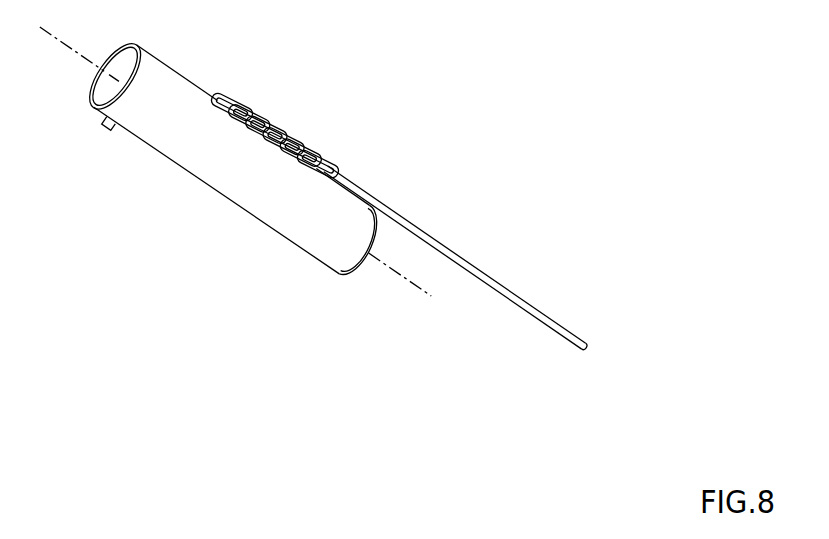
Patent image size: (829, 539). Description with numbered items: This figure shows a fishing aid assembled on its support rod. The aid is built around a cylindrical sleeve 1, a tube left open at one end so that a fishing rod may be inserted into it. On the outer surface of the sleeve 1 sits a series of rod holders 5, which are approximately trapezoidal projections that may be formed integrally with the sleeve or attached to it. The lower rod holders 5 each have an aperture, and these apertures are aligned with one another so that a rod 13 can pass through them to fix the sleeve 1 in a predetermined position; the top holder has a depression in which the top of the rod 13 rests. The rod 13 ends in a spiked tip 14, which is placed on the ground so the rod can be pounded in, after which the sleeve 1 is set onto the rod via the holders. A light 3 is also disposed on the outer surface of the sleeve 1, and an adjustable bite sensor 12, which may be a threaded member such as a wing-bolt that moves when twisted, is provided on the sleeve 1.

The cylindrical sleeve 1 is at (220, 193).
The light 3 is at (366, 195).
The rod holders 5 is at (275, 113).
The adjustable bite sensor 12 is at (114, 126).
The rod 13 is at (472, 273).
The spiked tip 14 is at (586, 344).